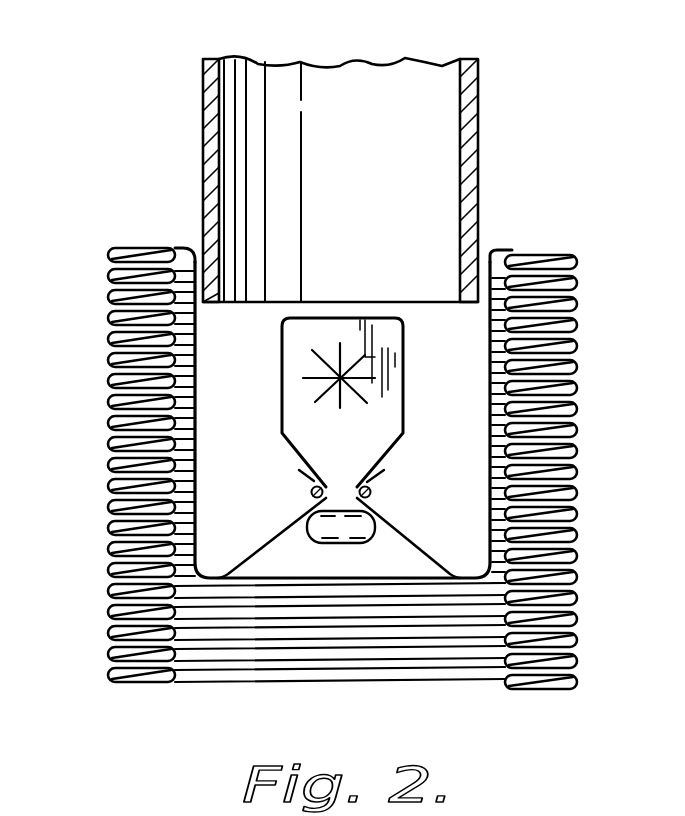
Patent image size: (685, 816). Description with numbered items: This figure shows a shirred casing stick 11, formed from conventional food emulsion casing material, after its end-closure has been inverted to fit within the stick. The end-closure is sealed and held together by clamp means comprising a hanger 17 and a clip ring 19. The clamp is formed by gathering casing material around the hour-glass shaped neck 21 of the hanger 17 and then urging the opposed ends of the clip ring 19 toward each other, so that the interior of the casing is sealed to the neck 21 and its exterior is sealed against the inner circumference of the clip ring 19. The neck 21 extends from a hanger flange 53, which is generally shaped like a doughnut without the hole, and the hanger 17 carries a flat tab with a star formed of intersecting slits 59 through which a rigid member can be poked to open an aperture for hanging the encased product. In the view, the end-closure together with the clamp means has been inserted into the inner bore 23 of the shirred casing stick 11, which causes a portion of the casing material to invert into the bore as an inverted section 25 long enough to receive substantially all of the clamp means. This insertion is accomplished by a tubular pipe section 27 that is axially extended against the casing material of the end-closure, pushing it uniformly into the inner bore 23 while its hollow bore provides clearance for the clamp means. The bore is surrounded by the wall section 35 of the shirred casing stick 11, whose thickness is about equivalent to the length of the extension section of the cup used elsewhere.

The shirred casing stick 11 is at (582, 317).
The hanger 17 is at (290, 343).
The clip ring 19 is at (372, 493).
The neck 21 is at (343, 491).
The inner bore 23 is at (497, 636).
The inverted section 25 is at (197, 428).
The pipe section 27 is at (478, 78).
The wall section 35 is at (118, 684).
The hanger flange 53 is at (345, 527).
The slits 59 is at (357, 401).